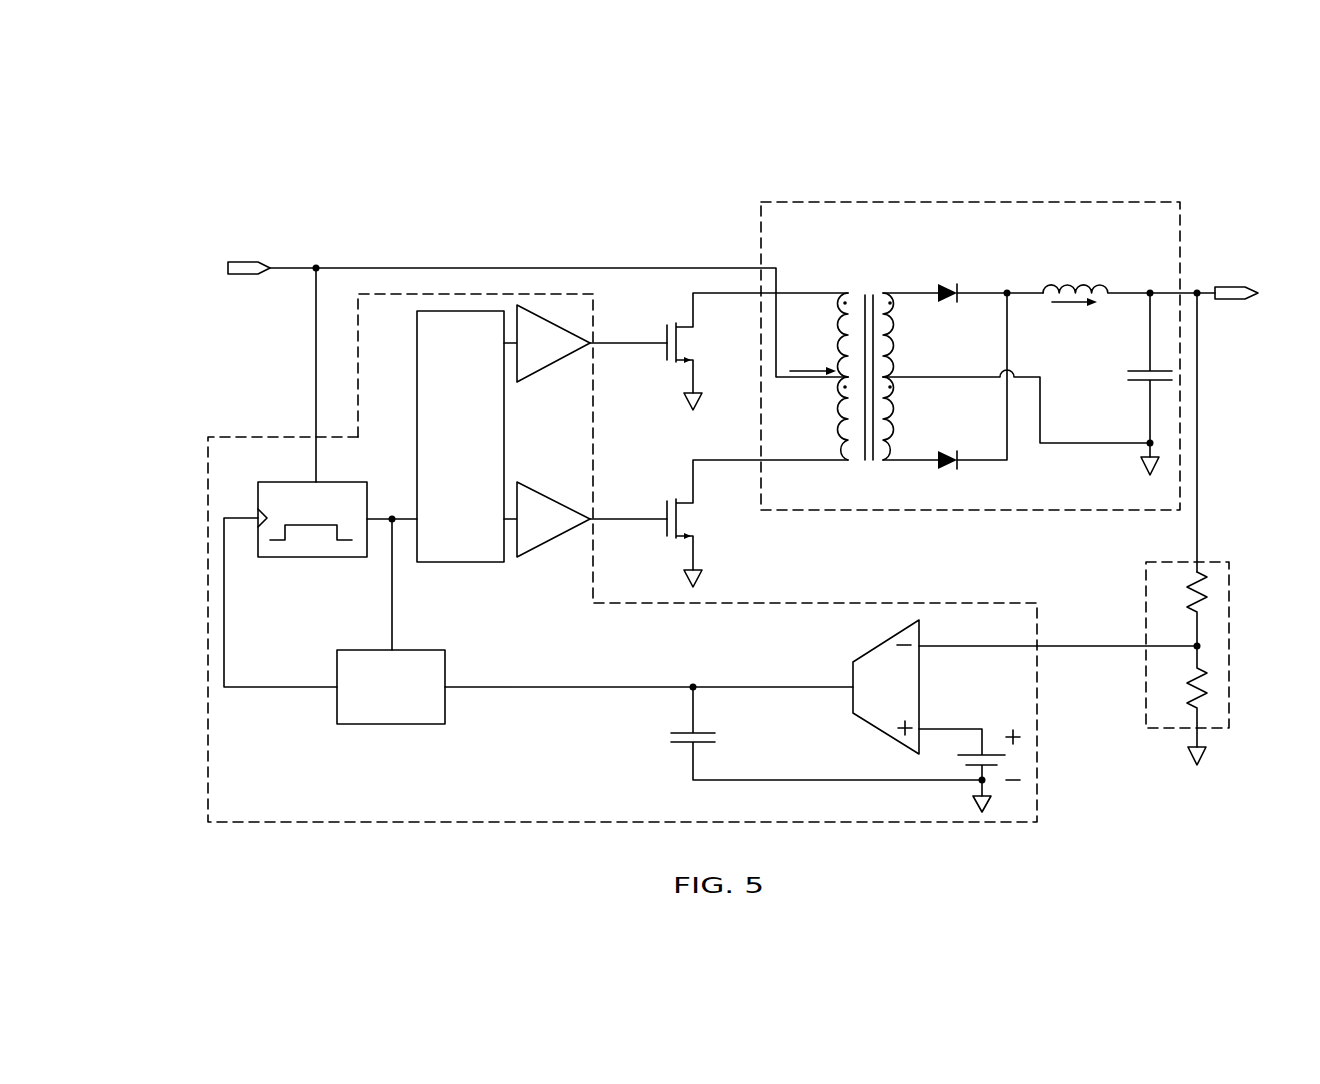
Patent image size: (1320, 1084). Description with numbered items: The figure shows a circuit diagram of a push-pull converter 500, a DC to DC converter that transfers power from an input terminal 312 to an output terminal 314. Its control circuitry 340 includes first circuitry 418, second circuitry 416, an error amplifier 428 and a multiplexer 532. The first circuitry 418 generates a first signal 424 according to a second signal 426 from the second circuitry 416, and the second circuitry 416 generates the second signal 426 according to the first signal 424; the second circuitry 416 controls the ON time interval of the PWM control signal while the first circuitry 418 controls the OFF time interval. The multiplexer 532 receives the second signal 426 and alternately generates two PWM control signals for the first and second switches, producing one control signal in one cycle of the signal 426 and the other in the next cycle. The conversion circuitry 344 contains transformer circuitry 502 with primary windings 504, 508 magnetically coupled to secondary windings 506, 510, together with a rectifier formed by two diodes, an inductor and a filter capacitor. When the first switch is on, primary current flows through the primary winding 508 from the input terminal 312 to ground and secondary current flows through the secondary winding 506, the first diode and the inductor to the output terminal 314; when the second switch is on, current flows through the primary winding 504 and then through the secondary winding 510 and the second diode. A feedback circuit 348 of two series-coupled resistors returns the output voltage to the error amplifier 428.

The push-pull converter 500 is at (244, 200).
The input terminal 312 is at (252, 276).
The output terminal 314 is at (1228, 304).
The control circuitry 340 is at (266, 434).
The conversion circuitry 344 is at (1045, 201).
The feedback circuit 348 is at (1143, 604).
The second circuitry 416 is at (292, 481).
The first circuitry 418 is at (408, 700).
The first signal 424 is at (272, 688).
The second signal 426 is at (378, 518).
The error amplifier 428 is at (871, 653).
The transformer circuitry 502 is at (866, 258).
The primary winding 504 is at (850, 292).
The secondary winding 506 is at (884, 292).
The primary winding 508 is at (850, 462).
The secondary winding 510 is at (884, 462).
The multiplexer 532 is at (416, 340).